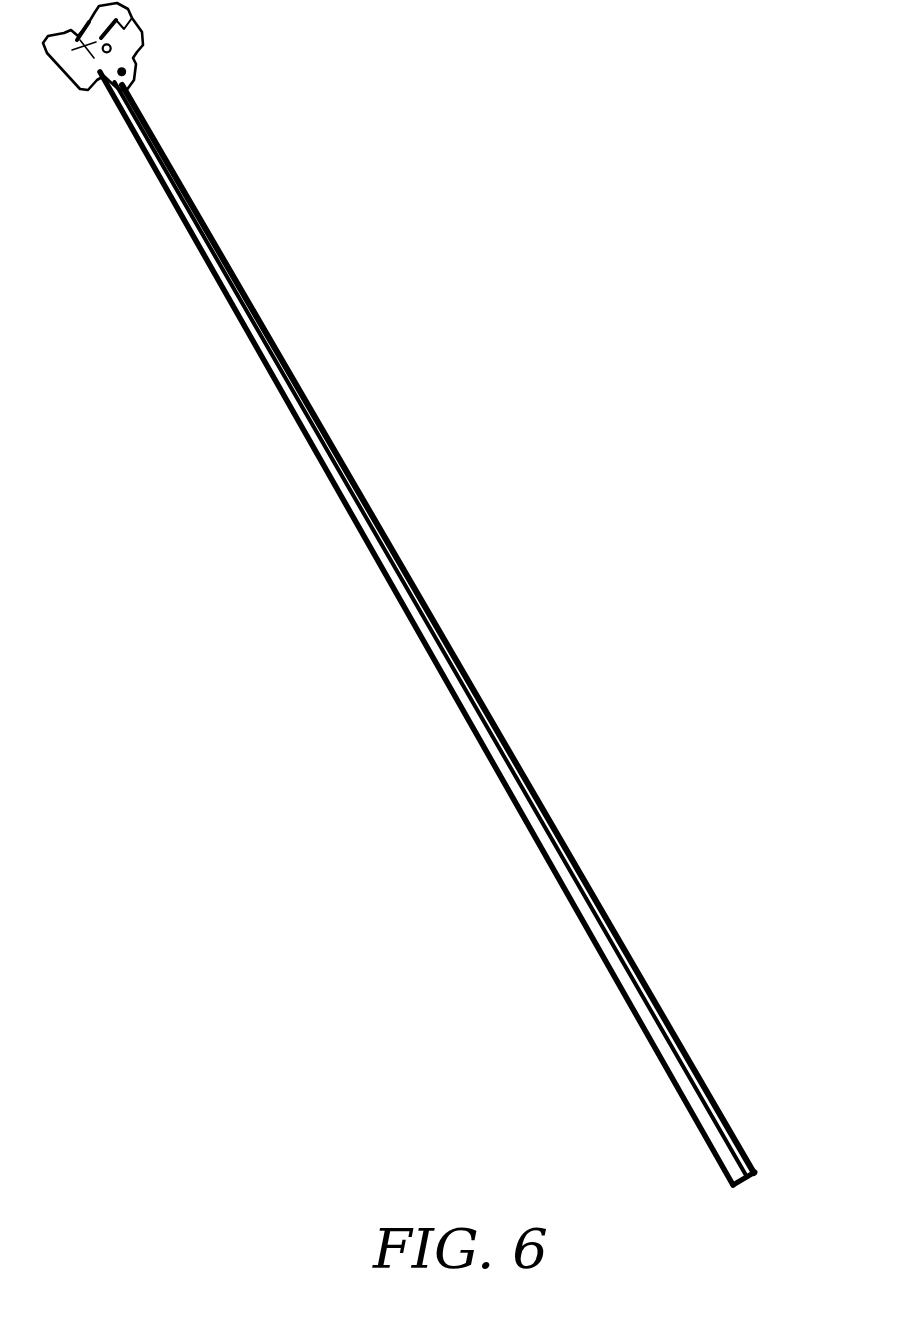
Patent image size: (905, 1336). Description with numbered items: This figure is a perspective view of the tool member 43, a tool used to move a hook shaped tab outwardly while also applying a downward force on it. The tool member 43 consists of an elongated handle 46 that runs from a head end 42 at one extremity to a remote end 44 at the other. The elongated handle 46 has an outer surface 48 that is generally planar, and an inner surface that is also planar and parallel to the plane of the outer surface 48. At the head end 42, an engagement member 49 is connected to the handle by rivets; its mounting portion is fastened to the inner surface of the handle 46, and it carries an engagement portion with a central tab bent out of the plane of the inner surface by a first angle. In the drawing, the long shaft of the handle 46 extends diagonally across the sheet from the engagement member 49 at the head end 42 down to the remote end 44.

The head end 42 is at (132, 64).
The tool member 43 is at (434, 594).
The remote end 44 is at (753, 1162).
The elongated handle 46 is at (418, 600).
The outer surface 48 is at (470, 717).
The engagement member 49 is at (131, 23).